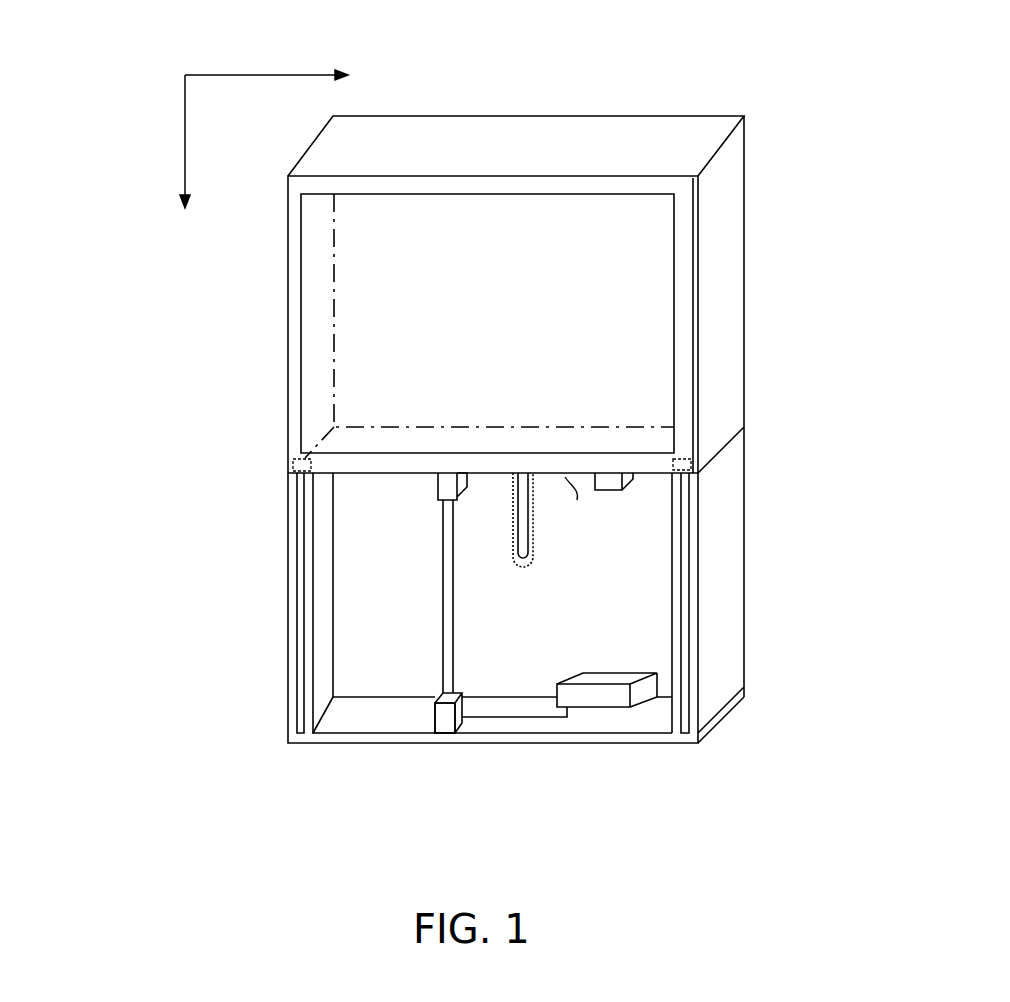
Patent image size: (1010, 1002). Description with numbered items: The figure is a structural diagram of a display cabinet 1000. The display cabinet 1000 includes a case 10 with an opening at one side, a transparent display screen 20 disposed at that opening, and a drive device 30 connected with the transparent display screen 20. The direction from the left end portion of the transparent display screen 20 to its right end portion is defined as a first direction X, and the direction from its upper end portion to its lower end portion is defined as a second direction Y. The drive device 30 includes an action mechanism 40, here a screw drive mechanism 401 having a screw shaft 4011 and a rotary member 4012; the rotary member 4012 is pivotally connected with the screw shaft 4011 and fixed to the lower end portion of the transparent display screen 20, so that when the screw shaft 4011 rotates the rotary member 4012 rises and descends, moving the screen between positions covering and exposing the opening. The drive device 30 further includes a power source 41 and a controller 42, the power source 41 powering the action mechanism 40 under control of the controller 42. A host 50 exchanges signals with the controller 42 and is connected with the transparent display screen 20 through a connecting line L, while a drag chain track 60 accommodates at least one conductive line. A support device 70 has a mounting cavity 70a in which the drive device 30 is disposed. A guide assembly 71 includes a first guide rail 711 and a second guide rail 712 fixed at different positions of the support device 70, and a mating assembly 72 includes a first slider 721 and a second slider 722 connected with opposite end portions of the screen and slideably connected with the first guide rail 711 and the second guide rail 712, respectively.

The display cabinet 1000 is at (147, 25).
The case 10 is at (728, 210).
The transparent display screen 20 is at (683, 318).
The drive device 30 is at (78, 492).
The action mechanism 40 is at (143, 552).
The screw drive mechanism 401 is at (206, 537).
The screw shaft 4011 is at (447, 540).
The rotary member 4012 is at (445, 490).
The power source 41 is at (447, 717).
The controller 42 is at (597, 697).
The host 50 is at (633, 478).
The drag chain track 60 is at (533, 538).
The support device 70 is at (723, 630).
The mounting cavity 70a is at (388, 624).
The guide assembly 71 is at (529, 612).
The first guide rail 711 is at (683, 693).
The second guide rail 712 is at (300, 712).
The mating assembly 72 is at (529, 453).
The first slider 721 is at (683, 464).
The second slider 722 is at (303, 465).